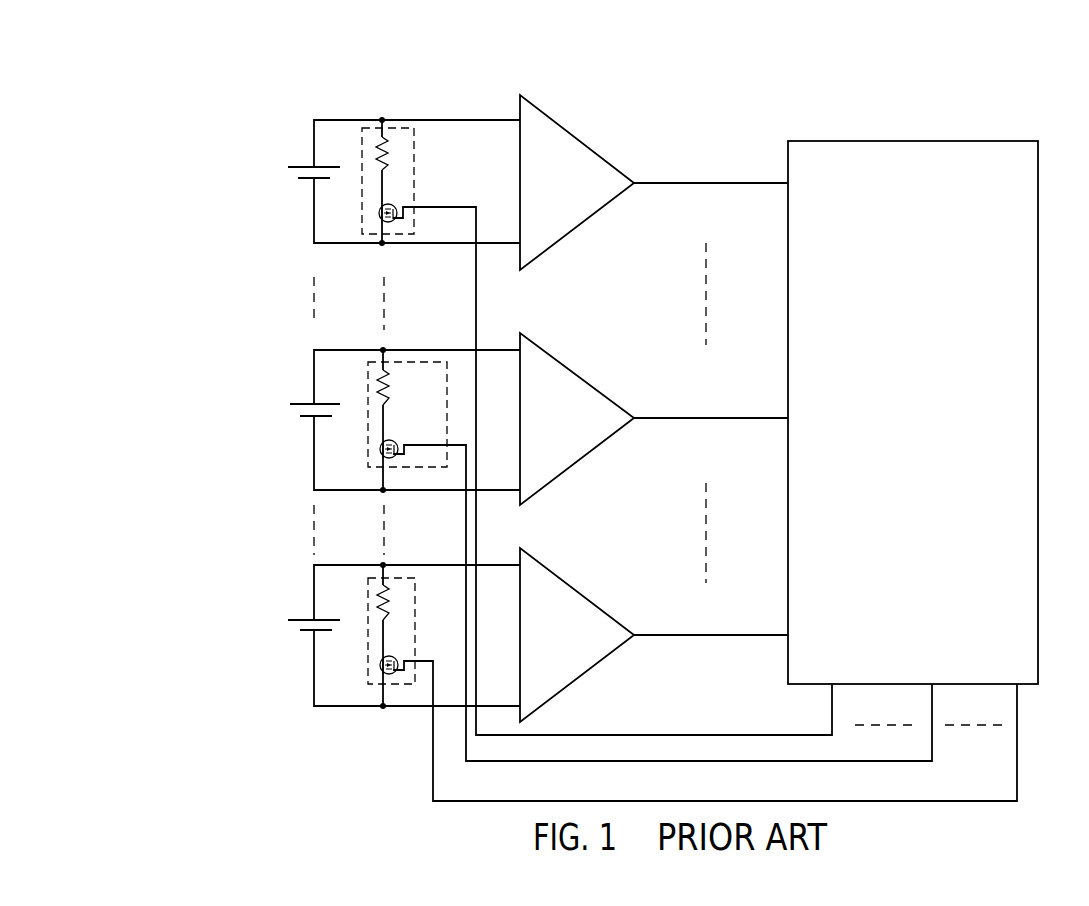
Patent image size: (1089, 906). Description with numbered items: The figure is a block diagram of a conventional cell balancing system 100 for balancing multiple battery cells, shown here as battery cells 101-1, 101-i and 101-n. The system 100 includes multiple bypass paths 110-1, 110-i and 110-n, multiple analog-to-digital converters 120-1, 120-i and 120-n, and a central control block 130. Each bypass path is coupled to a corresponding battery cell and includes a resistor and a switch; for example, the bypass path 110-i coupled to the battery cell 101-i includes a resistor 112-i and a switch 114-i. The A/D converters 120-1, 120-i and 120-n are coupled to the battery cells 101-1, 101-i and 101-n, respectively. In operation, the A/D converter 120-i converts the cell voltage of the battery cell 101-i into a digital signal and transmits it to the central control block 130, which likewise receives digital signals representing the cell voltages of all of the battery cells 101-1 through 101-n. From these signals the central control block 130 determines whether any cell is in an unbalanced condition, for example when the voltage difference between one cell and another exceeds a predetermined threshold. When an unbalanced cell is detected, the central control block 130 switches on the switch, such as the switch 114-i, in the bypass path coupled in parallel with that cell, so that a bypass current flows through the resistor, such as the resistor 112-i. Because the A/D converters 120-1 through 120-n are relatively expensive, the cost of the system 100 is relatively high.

The cell balancing system 100 is at (160, 130).
The battery cell 101-1 is at (292, 166).
The battery cell 101-i is at (295, 404).
The battery cell 101-n is at (294, 619).
The bypass path 110-1 is at (414, 134).
The bypass path 110-i is at (383, 414).
The bypass path 110-n is at (367, 632).
The resistor 112-i is at (392, 393).
The switch 114-i is at (409, 435).
The analog-to-digital converter 120-1 is at (569, 132).
The analog-to-digital converter 120-i is at (570, 369).
The analog-to-digital converter 120-n is at (570, 586).
The central control block 130 is at (897, 398).